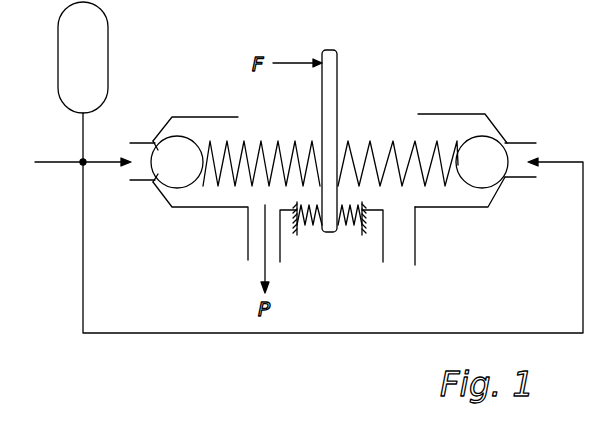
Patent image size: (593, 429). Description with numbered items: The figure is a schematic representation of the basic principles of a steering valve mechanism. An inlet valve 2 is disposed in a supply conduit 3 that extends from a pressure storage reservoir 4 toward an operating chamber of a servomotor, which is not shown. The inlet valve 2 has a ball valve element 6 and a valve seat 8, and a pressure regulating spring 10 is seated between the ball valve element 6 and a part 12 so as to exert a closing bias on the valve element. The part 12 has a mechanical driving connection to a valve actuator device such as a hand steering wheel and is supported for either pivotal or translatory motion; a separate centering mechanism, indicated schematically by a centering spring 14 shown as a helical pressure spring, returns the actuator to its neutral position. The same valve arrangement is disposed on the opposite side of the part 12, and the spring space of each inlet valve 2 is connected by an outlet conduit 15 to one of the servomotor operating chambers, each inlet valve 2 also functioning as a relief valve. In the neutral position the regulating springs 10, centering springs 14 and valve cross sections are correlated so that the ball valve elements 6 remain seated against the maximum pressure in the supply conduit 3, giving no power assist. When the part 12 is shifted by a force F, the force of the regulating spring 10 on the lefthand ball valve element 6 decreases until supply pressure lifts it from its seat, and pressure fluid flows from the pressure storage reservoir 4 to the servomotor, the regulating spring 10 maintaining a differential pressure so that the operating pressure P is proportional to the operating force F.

The inlet valve 2 is at (193, 97).
The supply conduit 3 is at (141, 152).
The pressure storage reservoir 4 is at (80, 47).
The ball valve element 6 is at (178, 182).
The valve seat 8 is at (155, 187).
The pressure regulating spring 10 is at (242, 180).
The part 12 is at (330, 63).
The centering spring 14 is at (350, 230).
The outlet conduit 15 is at (415, 243).